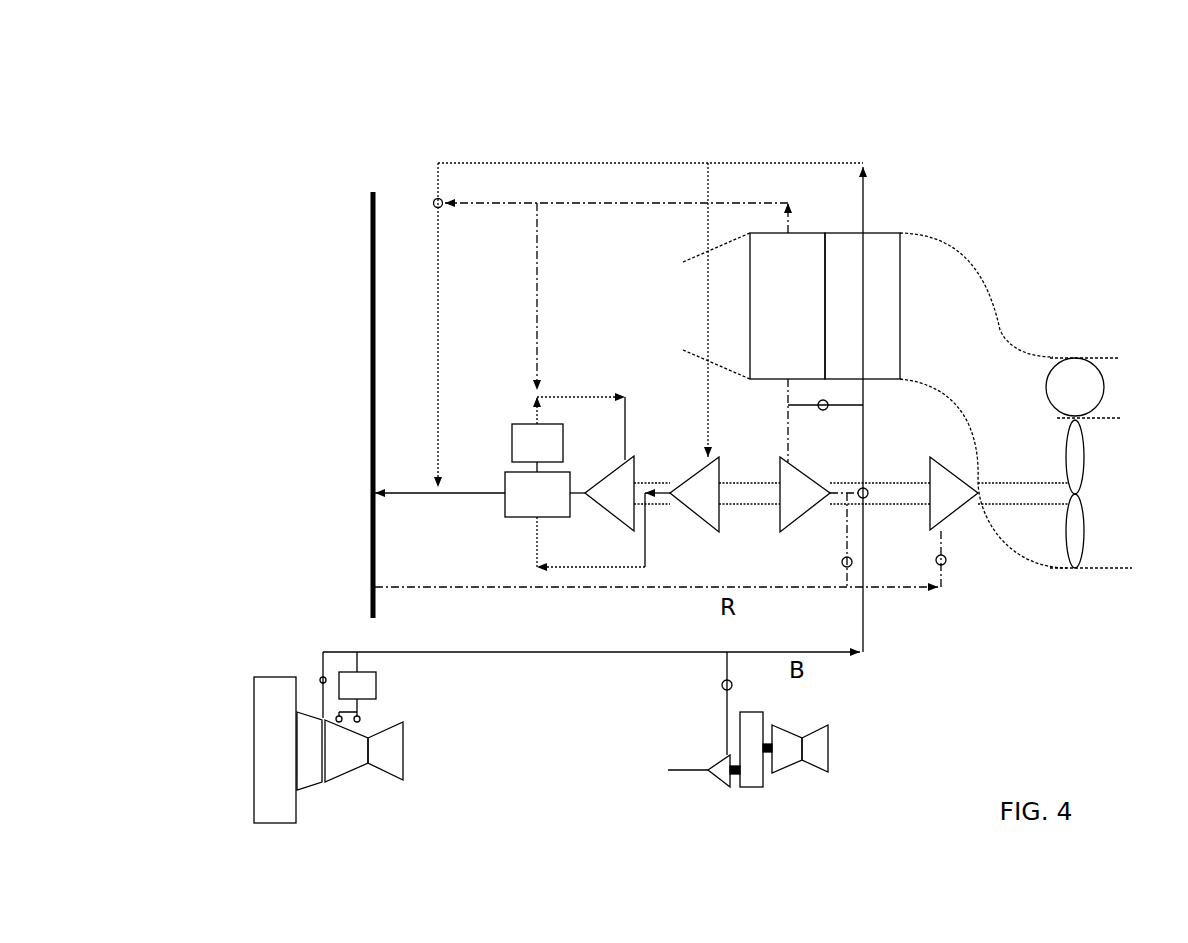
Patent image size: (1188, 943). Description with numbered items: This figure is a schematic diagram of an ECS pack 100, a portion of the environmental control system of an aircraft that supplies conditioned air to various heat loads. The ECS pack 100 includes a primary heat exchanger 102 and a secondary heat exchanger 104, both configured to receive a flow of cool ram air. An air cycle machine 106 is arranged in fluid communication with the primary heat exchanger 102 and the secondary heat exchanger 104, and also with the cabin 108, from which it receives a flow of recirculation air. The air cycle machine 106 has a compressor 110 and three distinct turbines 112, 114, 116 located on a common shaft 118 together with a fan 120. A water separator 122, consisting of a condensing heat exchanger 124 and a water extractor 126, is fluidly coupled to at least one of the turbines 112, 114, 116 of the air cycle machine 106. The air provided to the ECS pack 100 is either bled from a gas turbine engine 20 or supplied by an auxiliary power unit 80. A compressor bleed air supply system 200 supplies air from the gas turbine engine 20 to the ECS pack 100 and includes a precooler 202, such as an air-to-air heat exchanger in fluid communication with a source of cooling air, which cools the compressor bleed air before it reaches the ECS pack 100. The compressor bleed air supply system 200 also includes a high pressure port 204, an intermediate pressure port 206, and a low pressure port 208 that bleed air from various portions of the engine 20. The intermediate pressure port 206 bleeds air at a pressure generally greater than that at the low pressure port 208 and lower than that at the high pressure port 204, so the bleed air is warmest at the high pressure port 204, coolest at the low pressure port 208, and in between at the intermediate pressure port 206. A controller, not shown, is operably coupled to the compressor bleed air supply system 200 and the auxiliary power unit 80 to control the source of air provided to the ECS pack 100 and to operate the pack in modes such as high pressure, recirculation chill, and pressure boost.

The ECS pack 100 is at (1003, 140).
The primary heat exchanger 102 is at (885, 233).
The secondary heat exchanger 104 is at (805, 238).
The air cycle machine 106 is at (995, 568).
The cabin 108 is at (373, 250).
The compressor 110 is at (797, 507).
The turbine 112 is at (695, 517).
The turbine 114 is at (632, 473).
The turbine 116 is at (950, 523).
The common shaft 118 is at (897, 507).
The fan 120 is at (1078, 452).
The water separator 122 is at (447, 507).
The condensing heat exchanger 124 is at (505, 498).
The water extractor 126 is at (512, 443).
The gas turbine engine 20 is at (311, 741).
The auxiliary power unit 80 is at (782, 788).
The compressor bleed air supply system 200 is at (375, 715).
The precooler 202 is at (365, 685).
The high pressure port 204 is at (358, 722).
The intermediate pressure port 206 is at (339, 722).
The low pressure port 208 is at (320, 677).